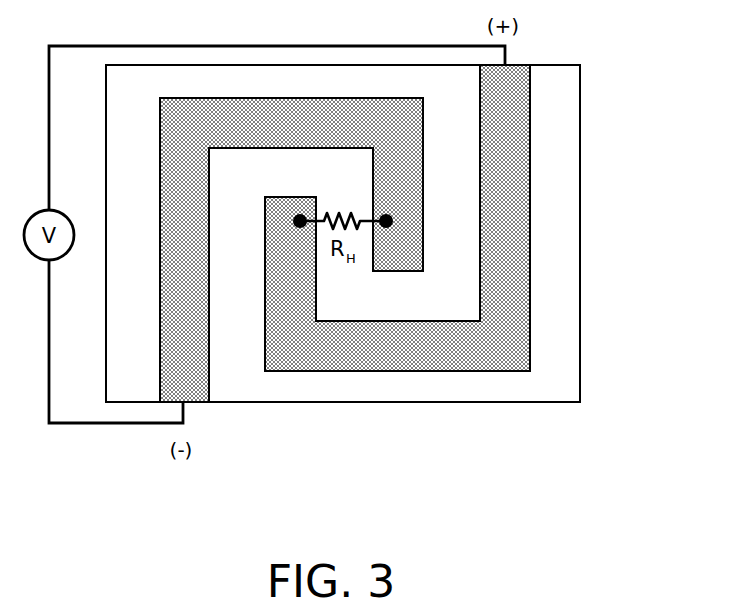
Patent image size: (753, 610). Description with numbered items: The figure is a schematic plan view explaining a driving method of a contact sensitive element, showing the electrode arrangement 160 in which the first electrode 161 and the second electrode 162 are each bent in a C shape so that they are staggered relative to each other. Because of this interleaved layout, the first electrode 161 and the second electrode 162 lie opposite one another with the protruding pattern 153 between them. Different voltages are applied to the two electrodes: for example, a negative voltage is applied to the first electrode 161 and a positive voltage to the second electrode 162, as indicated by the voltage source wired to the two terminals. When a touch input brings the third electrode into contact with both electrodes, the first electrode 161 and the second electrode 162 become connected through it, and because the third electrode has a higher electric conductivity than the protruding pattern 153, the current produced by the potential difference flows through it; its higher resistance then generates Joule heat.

The protruding pattern 153 is at (552, 109).
The electrode assembly (heating element) 160 is at (439, 233).
The first electrode 161 is at (395, 247).
The second electrode 162 is at (507, 180).